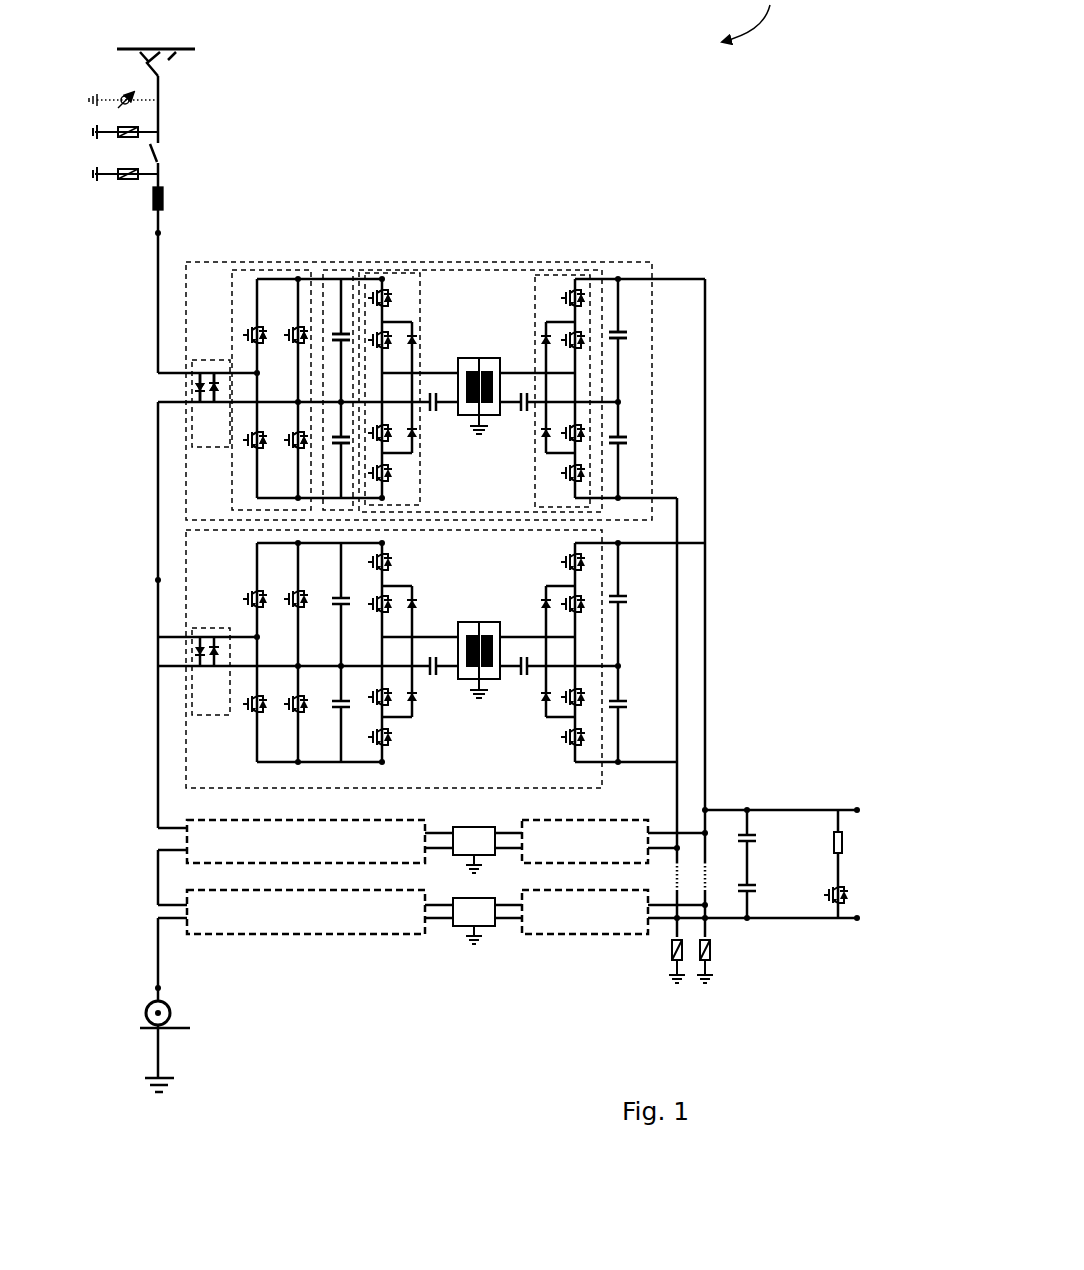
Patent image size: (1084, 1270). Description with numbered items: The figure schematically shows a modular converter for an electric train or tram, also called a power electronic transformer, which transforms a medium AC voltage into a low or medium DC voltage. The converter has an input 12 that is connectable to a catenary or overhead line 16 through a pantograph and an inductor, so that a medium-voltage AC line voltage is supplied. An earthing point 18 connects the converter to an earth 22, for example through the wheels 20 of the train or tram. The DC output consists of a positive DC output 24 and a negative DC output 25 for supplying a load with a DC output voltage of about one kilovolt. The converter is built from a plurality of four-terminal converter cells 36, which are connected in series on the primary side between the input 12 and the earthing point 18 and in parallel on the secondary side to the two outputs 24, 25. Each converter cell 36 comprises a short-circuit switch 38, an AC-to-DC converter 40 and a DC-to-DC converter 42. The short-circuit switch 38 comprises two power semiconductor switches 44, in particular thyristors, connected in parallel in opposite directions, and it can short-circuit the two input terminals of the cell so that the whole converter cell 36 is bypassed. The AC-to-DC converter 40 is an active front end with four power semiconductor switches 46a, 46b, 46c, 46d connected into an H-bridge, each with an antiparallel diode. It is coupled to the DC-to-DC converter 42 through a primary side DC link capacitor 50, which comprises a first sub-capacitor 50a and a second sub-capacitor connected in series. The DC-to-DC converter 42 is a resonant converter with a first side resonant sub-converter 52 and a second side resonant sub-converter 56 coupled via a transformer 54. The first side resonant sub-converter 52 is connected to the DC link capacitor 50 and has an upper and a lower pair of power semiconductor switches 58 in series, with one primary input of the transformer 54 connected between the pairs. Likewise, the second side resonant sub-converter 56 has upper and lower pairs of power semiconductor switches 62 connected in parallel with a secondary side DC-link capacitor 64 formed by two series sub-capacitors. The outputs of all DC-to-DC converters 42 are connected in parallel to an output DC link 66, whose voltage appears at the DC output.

The input 12 is at (160, 232).
The catenary or overhead line 16 is at (193, 49).
The earthing point 18 is at (158, 988).
The wheels 20 is at (172, 1012).
The earth 22 is at (172, 1086).
The positive DC output 24 is at (857, 806).
The negative DC output 25 is at (858, 917).
The converter cell 36 is at (229, 504).
The short-circuit switch 38 is at (229, 439).
The AC-to-DC converter 40 is at (266, 268).
The DC-to-DC converter 42 is at (485, 501).
The power semiconductor switches 44 is at (196, 387).
The power semiconductor switch 46a is at (245, 316).
The power semiconductor switch 46b is at (288, 318).
The power semiconductor switch 46c is at (237, 451).
The power semiconductor switch 46d is at (279, 453).
The primary side DC link capacitor 50 is at (344, 322).
The first sub-capacitor 50a is at (400, 288).
The first side resonant sub-converter 52 is at (424, 501).
The transformer 54 is at (479, 350).
The second side resonant sub-converter 56 is at (572, 501).
The power semiconductor switches 58 is at (399, 420).
The power semiconductor switches 62 is at (583, 416).
The secondary side DC-link capacitor 64 is at (628, 437).
The output DC link 66 is at (742, 857).